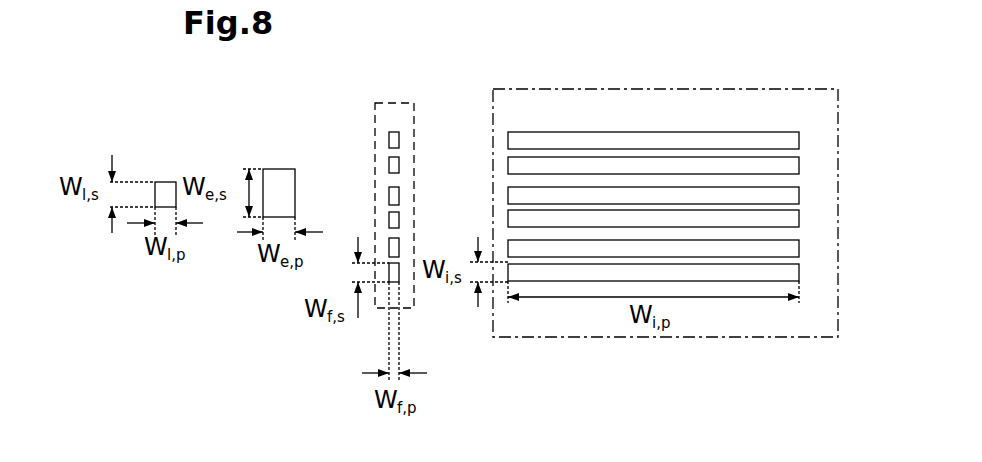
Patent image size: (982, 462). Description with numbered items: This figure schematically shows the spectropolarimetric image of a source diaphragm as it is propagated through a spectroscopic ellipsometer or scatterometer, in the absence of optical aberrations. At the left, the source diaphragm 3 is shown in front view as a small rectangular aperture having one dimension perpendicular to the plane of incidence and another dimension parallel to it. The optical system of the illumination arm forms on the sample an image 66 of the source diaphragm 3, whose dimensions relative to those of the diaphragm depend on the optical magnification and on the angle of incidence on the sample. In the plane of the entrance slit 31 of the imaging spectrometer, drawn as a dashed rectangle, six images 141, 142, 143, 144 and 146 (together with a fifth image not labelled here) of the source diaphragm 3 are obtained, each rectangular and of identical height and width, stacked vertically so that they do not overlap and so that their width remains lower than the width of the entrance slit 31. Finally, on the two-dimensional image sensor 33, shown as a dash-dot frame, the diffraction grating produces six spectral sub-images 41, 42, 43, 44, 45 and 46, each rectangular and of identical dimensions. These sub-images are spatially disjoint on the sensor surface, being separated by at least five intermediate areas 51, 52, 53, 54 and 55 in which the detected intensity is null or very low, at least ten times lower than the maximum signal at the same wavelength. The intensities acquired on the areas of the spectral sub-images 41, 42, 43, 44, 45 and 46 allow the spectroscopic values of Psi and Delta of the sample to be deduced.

The source diaphragm 3 is at (165, 182).
The image of the source diaphragm 66 is at (285, 169).
The entrance slit 31 is at (397, 103).
The image of the source diaphragm 141 is at (399, 141).
The image of the source diaphragm 142 is at (389, 165).
The image of the source diaphragm 143 is at (389, 194).
The image of the source diaphragm 144 is at (389, 222).
The image of the source diaphragm 146 is at (399, 272).
The image sensor 33 is at (548, 89).
The spectral sub-image 41 is at (800, 142).
The spectral sub-image 42 is at (799, 164).
The spectral sub-image 43 is at (799, 196).
The spectral sub-image 44 is at (799, 217).
The spectral sub-image 45 is at (799, 248).
The spectral sub-image 46 is at (799, 270).
The intermediate area 51 is at (770, 152).
The intermediate area 52 is at (737, 177).
The intermediate area 53 is at (637, 190).
The intermediate area 54 is at (717, 232).
The intermediate area 55 is at (765, 262).